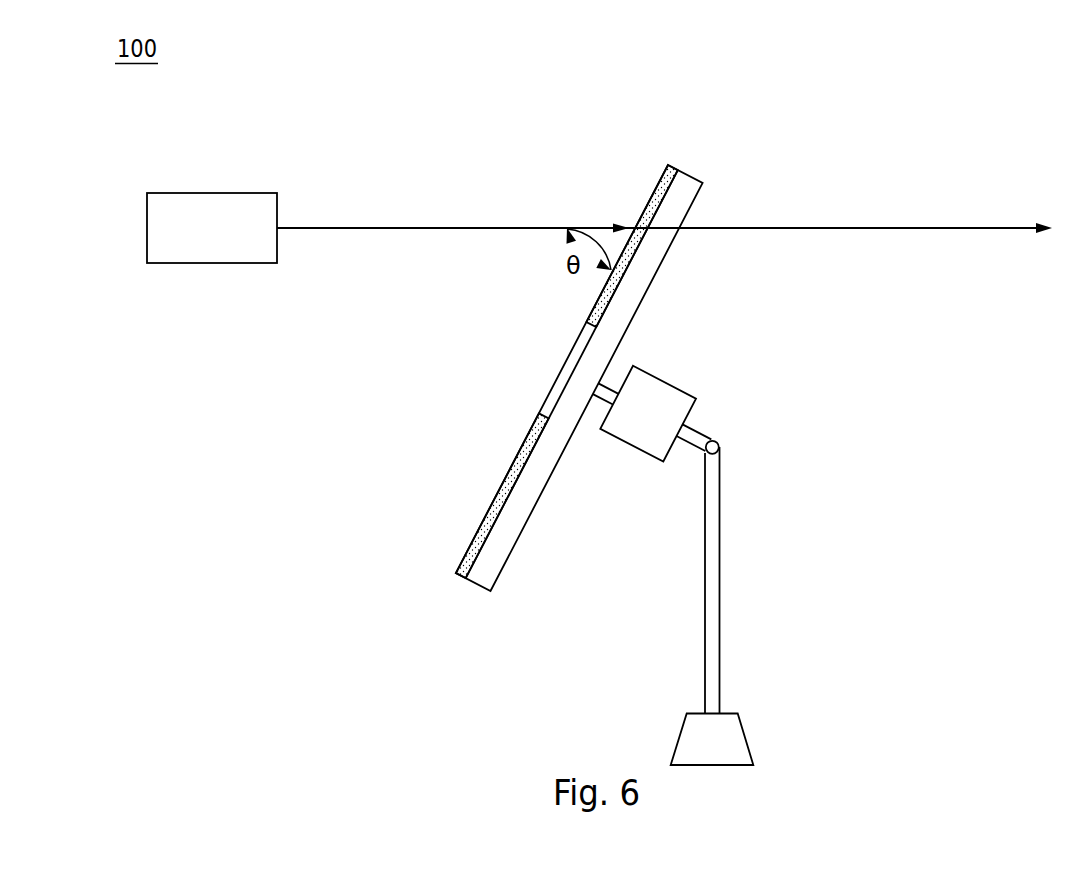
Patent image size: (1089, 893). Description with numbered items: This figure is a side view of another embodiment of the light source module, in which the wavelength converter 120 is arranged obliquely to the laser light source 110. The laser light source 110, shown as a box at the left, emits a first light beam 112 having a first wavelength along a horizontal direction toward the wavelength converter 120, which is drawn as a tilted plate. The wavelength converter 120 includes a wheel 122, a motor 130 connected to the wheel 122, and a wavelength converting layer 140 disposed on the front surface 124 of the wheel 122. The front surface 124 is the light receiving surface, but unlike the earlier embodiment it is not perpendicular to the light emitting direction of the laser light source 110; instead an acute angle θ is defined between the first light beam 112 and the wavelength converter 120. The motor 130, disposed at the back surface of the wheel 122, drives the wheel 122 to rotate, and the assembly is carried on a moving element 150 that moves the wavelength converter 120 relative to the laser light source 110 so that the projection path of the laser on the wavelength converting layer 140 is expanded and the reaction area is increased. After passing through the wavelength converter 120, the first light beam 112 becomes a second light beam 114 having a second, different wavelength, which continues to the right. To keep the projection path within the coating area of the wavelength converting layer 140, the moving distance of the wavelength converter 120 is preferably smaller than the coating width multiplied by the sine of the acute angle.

The laser light source 110 is at (210, 193).
The first light beam 112 is at (420, 227).
The second light beam 114 is at (771, 227).
The wavelength converter 120 is at (622, 316).
The wheel 122 is at (685, 188).
The front surface 124 is at (596, 302).
The motor 130 is at (662, 403).
The wavelength converting layer 140 is at (656, 197).
The moving element 150 is at (721, 578).